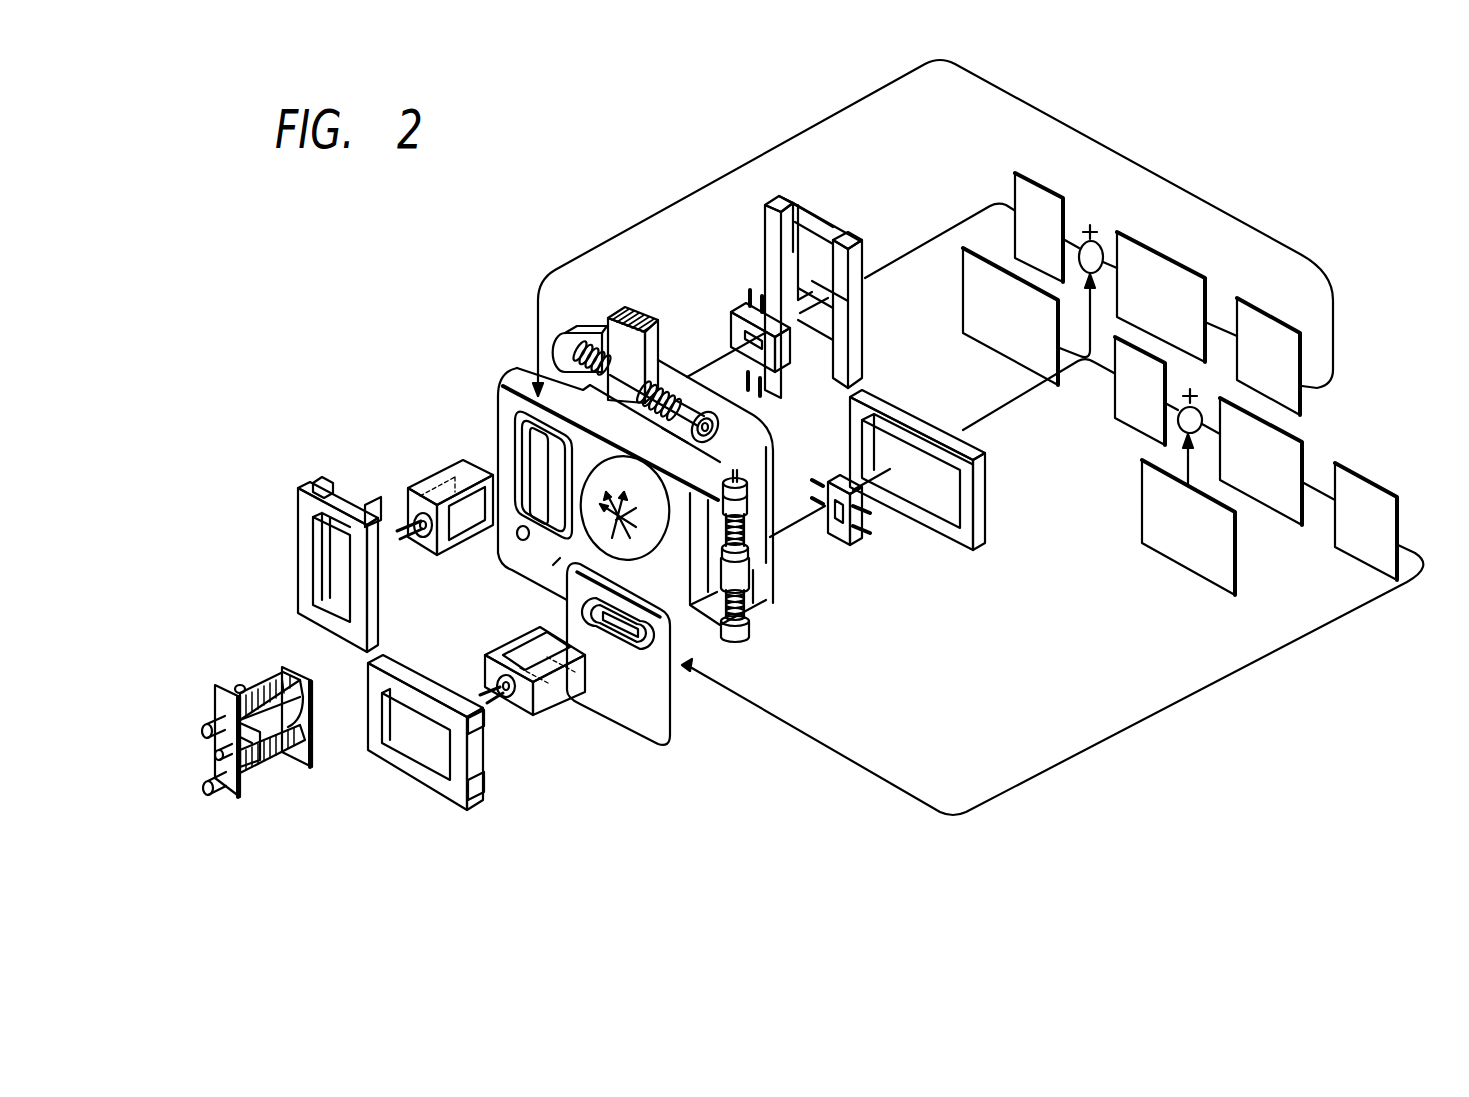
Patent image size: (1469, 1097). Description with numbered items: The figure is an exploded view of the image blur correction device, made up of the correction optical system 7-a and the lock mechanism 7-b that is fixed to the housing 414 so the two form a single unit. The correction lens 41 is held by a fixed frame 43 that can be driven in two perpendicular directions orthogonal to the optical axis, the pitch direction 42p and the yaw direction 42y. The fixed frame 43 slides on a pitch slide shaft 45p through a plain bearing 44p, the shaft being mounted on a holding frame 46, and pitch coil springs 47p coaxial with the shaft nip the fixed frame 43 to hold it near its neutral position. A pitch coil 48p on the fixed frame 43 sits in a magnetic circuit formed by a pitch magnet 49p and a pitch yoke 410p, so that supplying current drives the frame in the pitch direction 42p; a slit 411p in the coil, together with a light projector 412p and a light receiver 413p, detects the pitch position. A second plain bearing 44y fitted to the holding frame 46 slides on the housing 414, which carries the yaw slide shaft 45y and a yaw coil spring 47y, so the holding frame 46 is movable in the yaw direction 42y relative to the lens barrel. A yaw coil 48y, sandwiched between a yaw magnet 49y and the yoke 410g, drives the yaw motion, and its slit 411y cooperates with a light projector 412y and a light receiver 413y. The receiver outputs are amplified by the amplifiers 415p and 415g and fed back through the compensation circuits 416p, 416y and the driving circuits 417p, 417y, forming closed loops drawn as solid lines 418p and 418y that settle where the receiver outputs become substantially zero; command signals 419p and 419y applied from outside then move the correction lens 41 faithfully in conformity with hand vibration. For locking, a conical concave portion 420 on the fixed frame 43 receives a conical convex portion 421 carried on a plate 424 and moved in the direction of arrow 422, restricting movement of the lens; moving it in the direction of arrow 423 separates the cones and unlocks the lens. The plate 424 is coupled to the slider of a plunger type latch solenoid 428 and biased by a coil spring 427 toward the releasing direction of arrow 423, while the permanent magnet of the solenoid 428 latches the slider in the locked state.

The correction optical system 7-a is at (336, 362).
The lock mechanism 7-b is at (190, 612).
The correction lens 41 is at (611, 457).
The yaw direction 42y is at (628, 507).
The pitch direction 42p is at (617, 533).
The fixed frame 43 is at (556, 562).
The plain bearing 44y is at (580, 345).
The plain bearing 44p is at (750, 495).
The yaw slide shaft 45y is at (718, 430).
The pitch slide shaft 45p is at (736, 478).
The holding frame 46 is at (768, 562).
The yaw coil spring 47y is at (667, 393).
The pitch coil springs 47p is at (752, 535).
The yaw coil 48y is at (503, 394).
The pitch coil 48p is at (650, 678).
The yaw magnet 49y is at (332, 471).
The pitch magnet 49p is at (483, 737).
The yoke bracket 410g is at (797, 203).
The pitch yoke 410p is at (967, 503).
The slit 411y is at (487, 538).
The slit 411p is at (560, 637).
The light projector 412y is at (418, 538).
The light projector 412p is at (503, 700).
The light receiver 413y is at (780, 374).
The light receiver 413p is at (838, 550).
The housing 414 is at (662, 307).
The amplifier 415g is at (1046, 188).
The amplifier 415p is at (1123, 418).
The compensation circuit 416y is at (1172, 262).
The compensation circuit 416p is at (1301, 425).
The driving circuit 417y is at (1263, 310).
The driving circuit 417p is at (1394, 489).
The closed system 418y is at (1104, 149).
The closed system 418p is at (1145, 720).
The command signal 419y is at (980, 334).
The command signal 419p is at (1243, 545).
The conical concave portion 420 is at (521, 541).
The conical convex portion 421 is at (248, 686).
The arrow 422 is at (242, 657).
The arrow 423 is at (210, 677).
The plate 424 is at (232, 788).
The coil spring 427 is at (283, 758).
The plunger type latch solenoid 428 is at (312, 687).